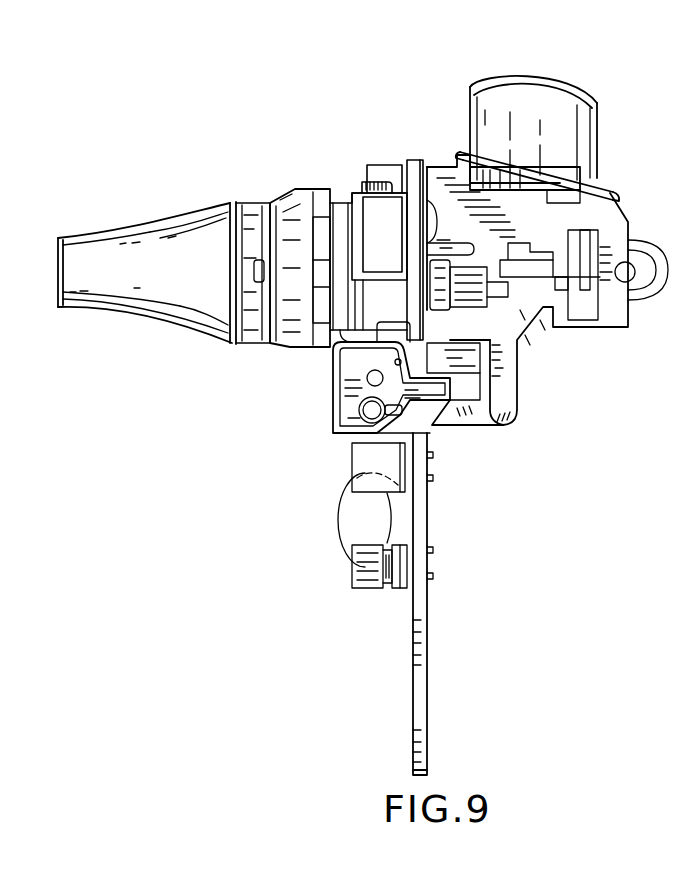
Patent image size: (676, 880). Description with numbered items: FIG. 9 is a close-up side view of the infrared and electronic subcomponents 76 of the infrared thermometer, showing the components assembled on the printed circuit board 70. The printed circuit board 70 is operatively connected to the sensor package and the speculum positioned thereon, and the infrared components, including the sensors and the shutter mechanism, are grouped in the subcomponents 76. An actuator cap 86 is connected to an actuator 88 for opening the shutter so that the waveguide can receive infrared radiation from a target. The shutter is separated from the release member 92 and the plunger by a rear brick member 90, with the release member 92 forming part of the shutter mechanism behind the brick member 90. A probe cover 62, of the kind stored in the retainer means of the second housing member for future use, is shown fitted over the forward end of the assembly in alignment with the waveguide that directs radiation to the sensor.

The probe cover 62 is at (161, 320).
The printed circuit board 70 is at (425, 632).
The infrared and electronic subcomponents 76 is at (375, 152).
The actuator cap 86 is at (585, 87).
The actuator 88 is at (520, 380).
The rear brick member 90 is at (302, 357).
The release member 92 is at (430, 425).